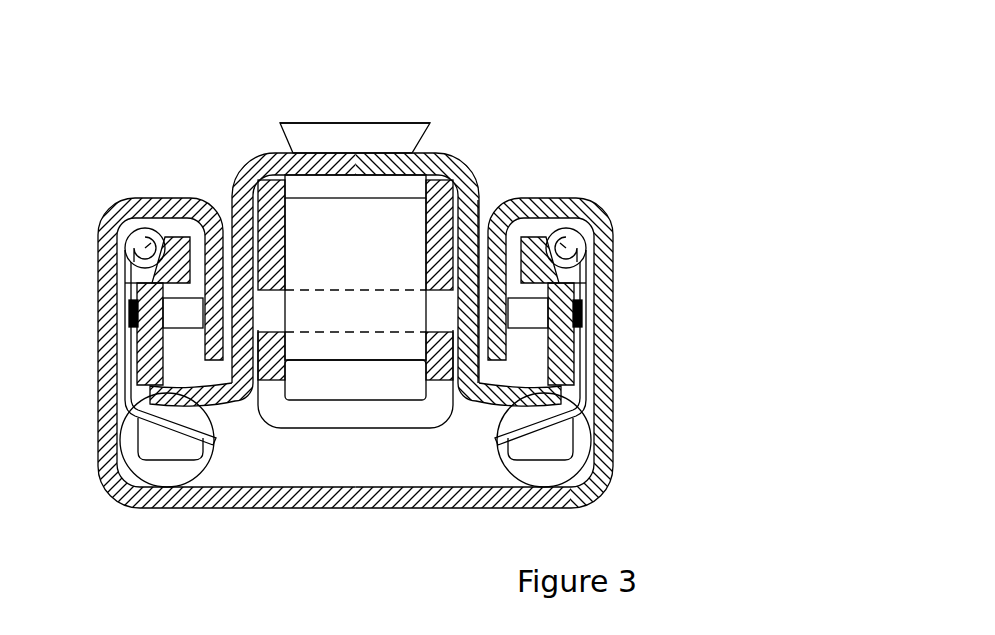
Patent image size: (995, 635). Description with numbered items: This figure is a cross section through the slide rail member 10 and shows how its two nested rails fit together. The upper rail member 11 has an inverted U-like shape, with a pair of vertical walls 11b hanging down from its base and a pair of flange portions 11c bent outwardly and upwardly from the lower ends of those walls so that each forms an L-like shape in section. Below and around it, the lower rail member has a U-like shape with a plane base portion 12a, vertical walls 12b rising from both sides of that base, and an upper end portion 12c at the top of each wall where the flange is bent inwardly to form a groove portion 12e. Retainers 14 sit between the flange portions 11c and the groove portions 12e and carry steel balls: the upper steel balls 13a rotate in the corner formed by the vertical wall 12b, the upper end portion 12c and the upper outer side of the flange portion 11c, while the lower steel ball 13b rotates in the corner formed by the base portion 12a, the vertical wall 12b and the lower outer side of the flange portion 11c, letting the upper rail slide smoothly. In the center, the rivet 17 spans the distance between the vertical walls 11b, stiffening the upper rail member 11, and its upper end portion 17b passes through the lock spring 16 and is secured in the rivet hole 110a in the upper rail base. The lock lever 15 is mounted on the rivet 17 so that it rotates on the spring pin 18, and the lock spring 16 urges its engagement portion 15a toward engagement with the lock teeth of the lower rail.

The slide rail member 10 is at (433, 92).
The upper rail member 11 is at (246, 166).
The vertical walls 11b is at (481, 365).
The flange portions 11c is at (562, 343).
The base portion 12a is at (343, 490).
The vertical walls 12b is at (118, 342).
The upper end portion 12c is at (158, 212).
The groove portion 12e is at (190, 284).
The upper steel balls 13a is at (138, 247).
The lower steel ball 13b is at (128, 440).
The retainers 14 is at (136, 395).
The lock lever 15 is at (382, 417).
The engagement portion 15a is at (172, 320).
The lock spring 16 is at (343, 185).
The rivet 17 is at (347, 227).
The upper end portion 17b is at (367, 133).
The spring pin 18 is at (272, 312).
The rivet hole 110a is at (288, 124).